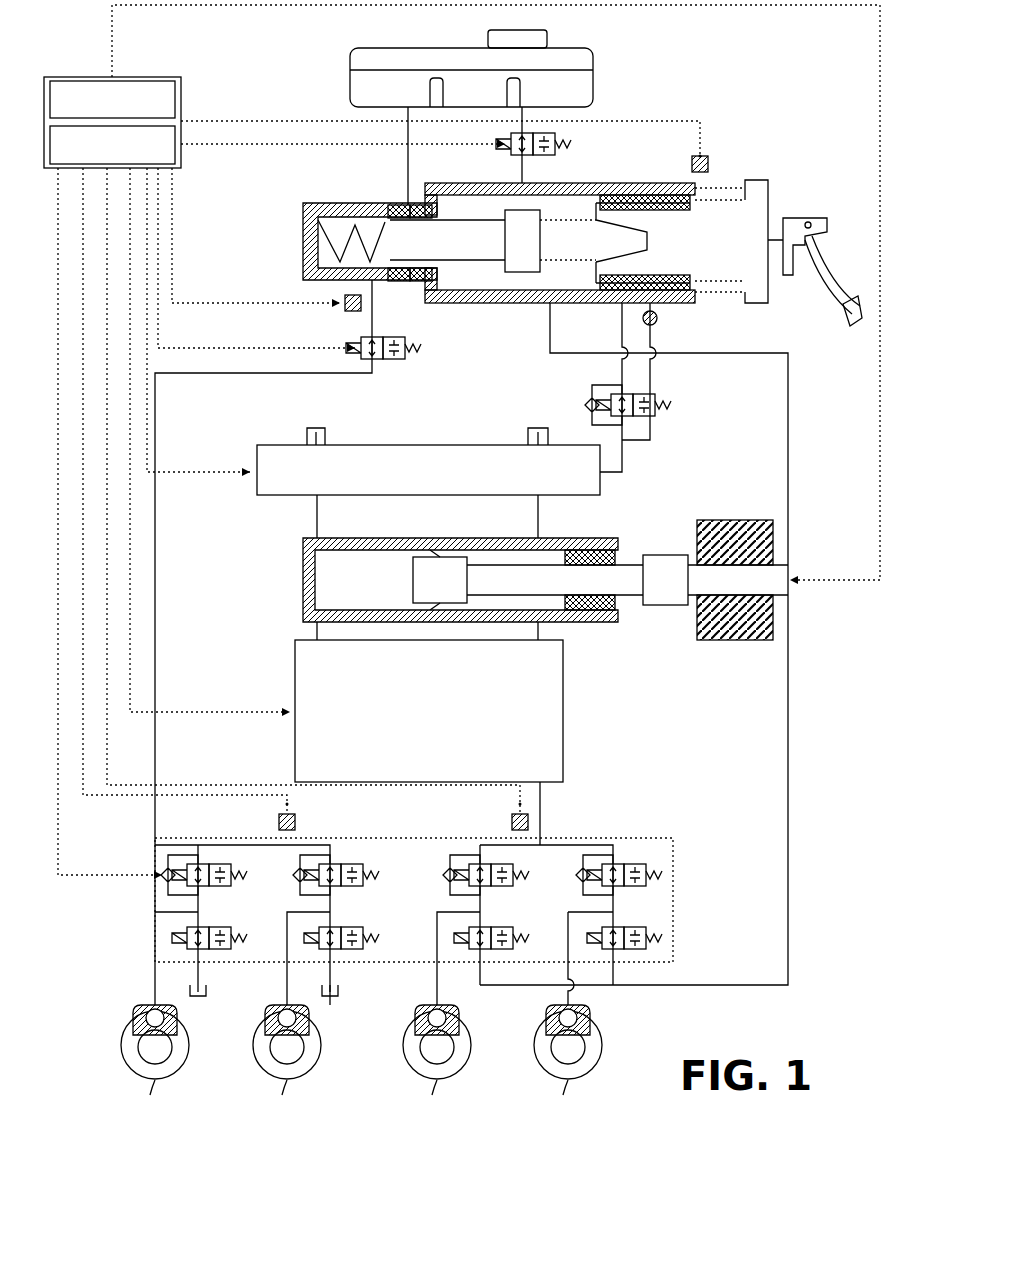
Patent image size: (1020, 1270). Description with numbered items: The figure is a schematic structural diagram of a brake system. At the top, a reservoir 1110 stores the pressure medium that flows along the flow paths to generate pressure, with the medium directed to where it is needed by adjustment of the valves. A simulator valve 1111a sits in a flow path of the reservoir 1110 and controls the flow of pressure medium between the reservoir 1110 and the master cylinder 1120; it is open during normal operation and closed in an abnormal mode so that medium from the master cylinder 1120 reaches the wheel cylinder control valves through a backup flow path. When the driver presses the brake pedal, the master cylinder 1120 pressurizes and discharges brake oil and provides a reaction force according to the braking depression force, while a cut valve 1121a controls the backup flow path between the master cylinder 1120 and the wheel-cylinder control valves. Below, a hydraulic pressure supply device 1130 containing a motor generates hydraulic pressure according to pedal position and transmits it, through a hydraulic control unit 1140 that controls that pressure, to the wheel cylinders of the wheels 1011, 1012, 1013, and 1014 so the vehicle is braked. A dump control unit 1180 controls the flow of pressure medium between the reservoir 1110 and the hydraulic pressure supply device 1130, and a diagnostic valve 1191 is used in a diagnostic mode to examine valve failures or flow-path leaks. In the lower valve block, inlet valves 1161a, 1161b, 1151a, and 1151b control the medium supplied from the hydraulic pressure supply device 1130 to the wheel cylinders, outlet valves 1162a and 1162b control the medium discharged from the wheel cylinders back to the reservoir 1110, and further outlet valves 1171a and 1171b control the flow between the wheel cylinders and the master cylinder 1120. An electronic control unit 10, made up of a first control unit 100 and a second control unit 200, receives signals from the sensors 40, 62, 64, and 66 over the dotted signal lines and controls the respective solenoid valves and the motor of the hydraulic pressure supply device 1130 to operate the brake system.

The electronic control unit 10 is at (145, 77).
The first control unit 100 is at (181, 105).
The second control unit 200 is at (181, 150).
The reservoir 1110 is at (593, 52).
The simulator valve 1111a is at (557, 144).
The sensor 40 is at (708, 164).
The master cylinder 1120 is at (300, 218).
The sensor 62 is at (345, 305).
The cut valve 1121a is at (421, 346).
The dump control unit 1180 is at (258, 442).
The diagnostic valve 1191 is at (592, 405).
The hydraulic pressure supply device 1130 is at (300, 548).
The hydraulic control unit 1140 is at (295, 664).
The sensor 66 is at (279, 823).
The sensor 64 is at (528, 824).
The inlet valve 1161a is at (155, 846).
The inlet valve 1161b is at (352, 836).
The inlet valve 1151a is at (497, 865).
The inlet valve 1151b is at (637, 864).
The outlet valve 1162a is at (185, 942).
The outlet valve 1162b is at (368, 947).
The outlet valve 1171a is at (492, 952).
The outlet valve 1171b is at (644, 940).
The wheel 1013 is at (155, 1062).
The wheel 1014 is at (287, 1062).
The wheel 1011 is at (437, 1062).
The wheel 1012 is at (568, 1062).